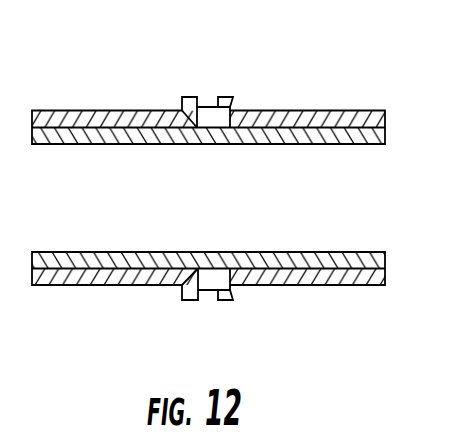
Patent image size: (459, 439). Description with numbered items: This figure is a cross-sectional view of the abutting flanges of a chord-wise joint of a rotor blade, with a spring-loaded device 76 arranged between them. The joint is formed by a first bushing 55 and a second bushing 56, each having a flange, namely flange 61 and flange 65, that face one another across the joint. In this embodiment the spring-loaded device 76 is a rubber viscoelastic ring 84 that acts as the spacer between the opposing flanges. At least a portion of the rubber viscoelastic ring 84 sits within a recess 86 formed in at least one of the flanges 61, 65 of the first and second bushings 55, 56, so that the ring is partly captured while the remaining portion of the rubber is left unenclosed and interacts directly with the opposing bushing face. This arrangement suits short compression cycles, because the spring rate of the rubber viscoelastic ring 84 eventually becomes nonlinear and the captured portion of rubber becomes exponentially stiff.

The first bushing 55 is at (344, 111).
The second bushing 56 is at (85, 111).
The flange 65 is at (191, 96).
The spring-loaded device 76 is at (210, 107).
The flange 61 is at (228, 96).
The rubber viscoelastic ring 84 is at (201, 292).
The recess 86 is at (230, 302).